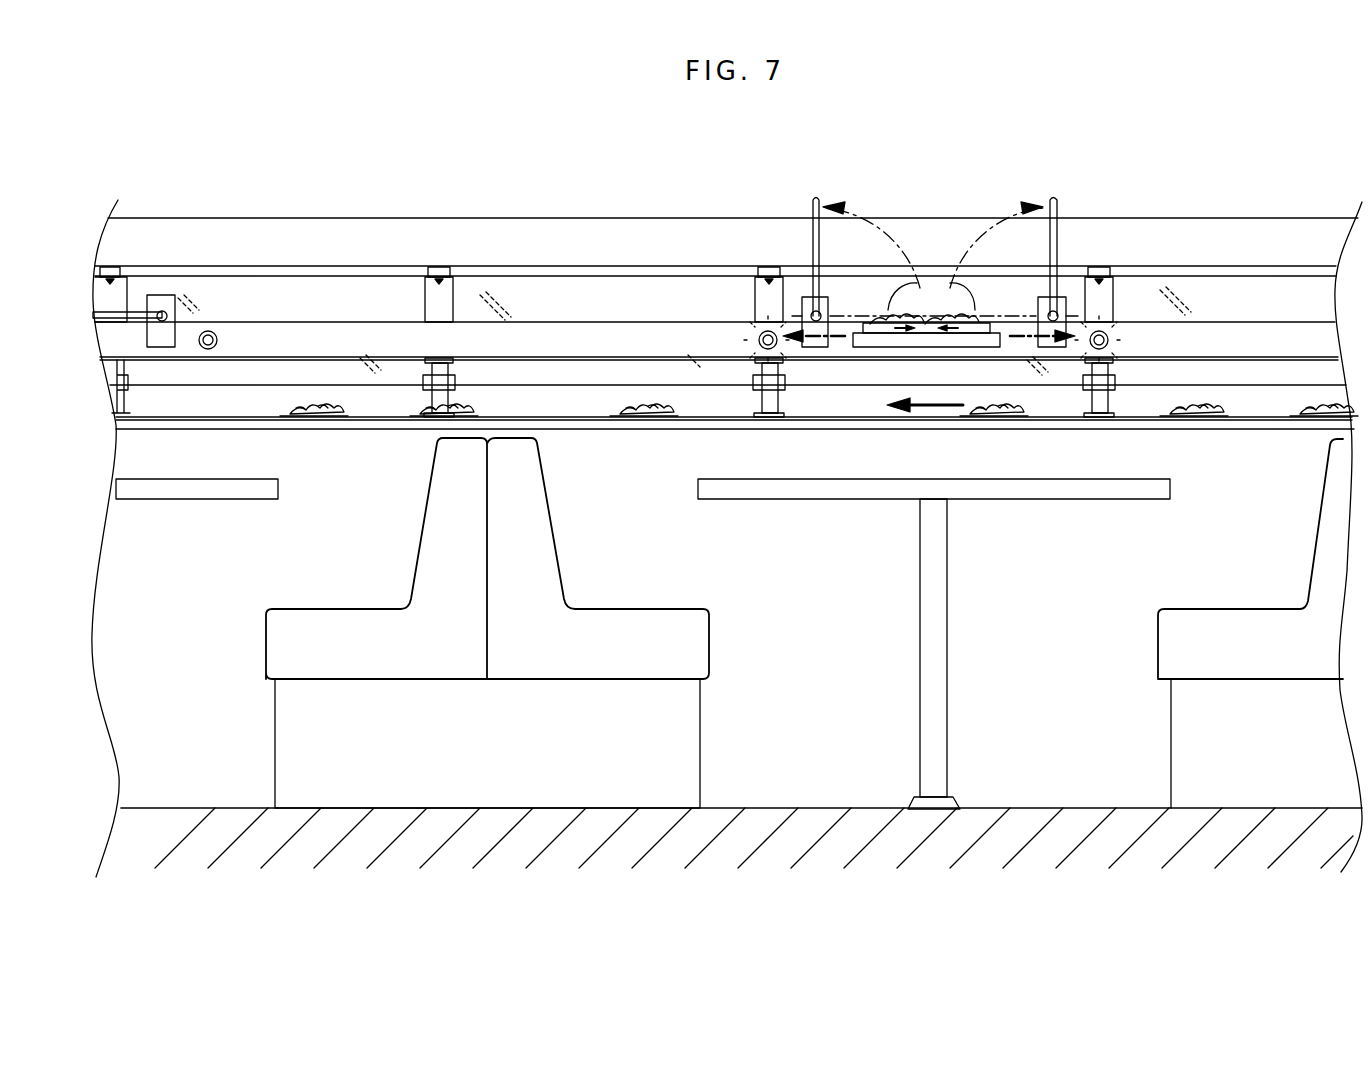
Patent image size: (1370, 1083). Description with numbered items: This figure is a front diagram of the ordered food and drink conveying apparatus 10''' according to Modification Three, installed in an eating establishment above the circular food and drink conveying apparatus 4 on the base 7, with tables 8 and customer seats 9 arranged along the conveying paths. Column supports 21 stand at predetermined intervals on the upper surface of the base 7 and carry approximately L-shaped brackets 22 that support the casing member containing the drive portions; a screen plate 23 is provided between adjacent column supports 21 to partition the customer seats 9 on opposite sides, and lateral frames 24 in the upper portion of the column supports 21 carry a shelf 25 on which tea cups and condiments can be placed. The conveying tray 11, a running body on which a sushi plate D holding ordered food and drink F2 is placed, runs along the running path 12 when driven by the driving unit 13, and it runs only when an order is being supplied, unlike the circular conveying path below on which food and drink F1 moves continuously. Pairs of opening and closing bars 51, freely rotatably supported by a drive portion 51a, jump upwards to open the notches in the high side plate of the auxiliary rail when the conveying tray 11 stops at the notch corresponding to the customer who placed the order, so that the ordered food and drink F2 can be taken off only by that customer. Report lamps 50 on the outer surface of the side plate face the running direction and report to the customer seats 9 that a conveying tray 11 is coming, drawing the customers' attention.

The circular food and drink conveying apparatus 4 is at (1240, 395).
The base 7 is at (741, 725).
The table 8 is at (225, 499).
The customer seat 9 is at (345, 615).
The ordered food and drink conveying apparatus 10''' is at (1097, 214).
The conveying tray 11 is at (993, 297).
The running path 12 is at (535, 297).
The driving unit 13 is at (647, 299).
The column support 21 is at (425, 383).
The bracket 22 is at (440, 297).
The screen plate 23 is at (751, 327).
The lateral frame 24 is at (438, 266).
The shelf 25 is at (320, 243).
The report lamp 50 is at (208, 330).
The opening and closing bar 51 is at (132, 313).
The drive portion 51a is at (160, 337).
The food and drink F1 is at (640, 406).
The ordered food and drink F2 is at (948, 297).
The sushi plate D is at (643, 417).